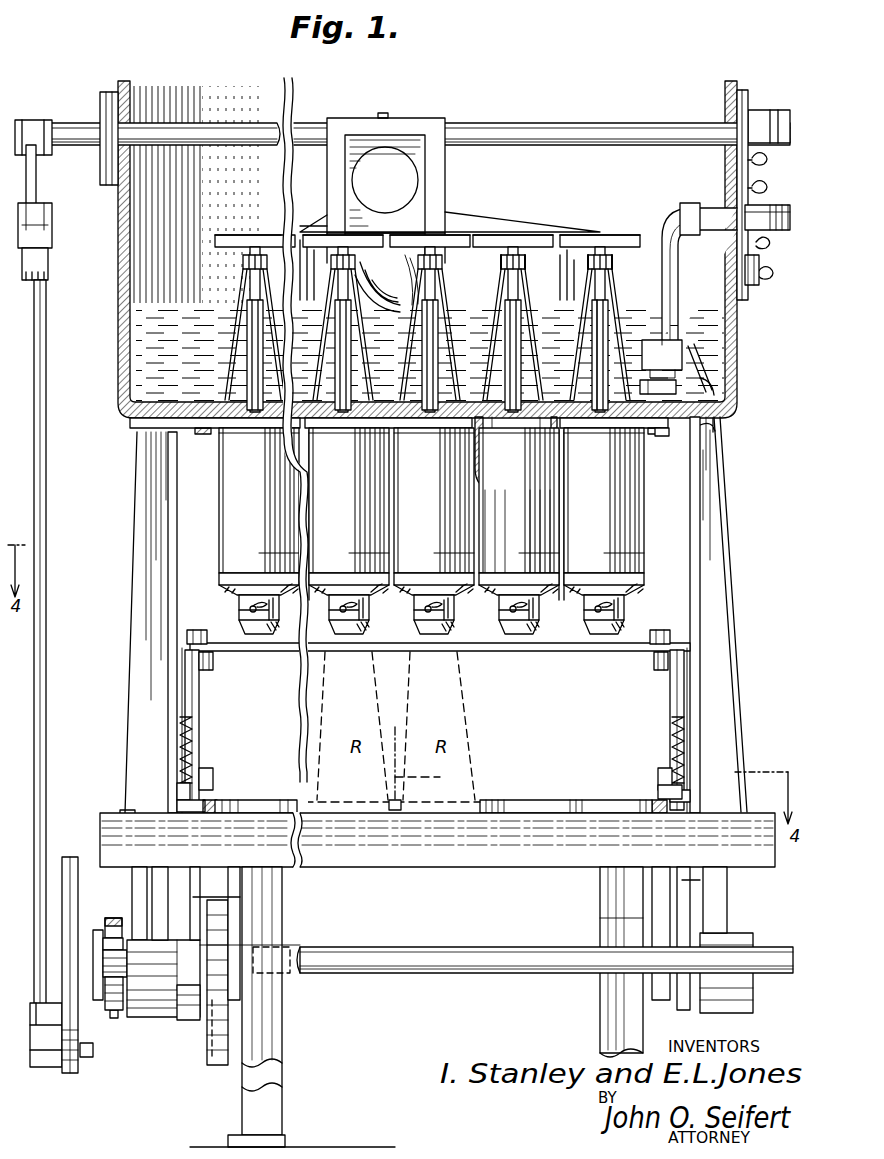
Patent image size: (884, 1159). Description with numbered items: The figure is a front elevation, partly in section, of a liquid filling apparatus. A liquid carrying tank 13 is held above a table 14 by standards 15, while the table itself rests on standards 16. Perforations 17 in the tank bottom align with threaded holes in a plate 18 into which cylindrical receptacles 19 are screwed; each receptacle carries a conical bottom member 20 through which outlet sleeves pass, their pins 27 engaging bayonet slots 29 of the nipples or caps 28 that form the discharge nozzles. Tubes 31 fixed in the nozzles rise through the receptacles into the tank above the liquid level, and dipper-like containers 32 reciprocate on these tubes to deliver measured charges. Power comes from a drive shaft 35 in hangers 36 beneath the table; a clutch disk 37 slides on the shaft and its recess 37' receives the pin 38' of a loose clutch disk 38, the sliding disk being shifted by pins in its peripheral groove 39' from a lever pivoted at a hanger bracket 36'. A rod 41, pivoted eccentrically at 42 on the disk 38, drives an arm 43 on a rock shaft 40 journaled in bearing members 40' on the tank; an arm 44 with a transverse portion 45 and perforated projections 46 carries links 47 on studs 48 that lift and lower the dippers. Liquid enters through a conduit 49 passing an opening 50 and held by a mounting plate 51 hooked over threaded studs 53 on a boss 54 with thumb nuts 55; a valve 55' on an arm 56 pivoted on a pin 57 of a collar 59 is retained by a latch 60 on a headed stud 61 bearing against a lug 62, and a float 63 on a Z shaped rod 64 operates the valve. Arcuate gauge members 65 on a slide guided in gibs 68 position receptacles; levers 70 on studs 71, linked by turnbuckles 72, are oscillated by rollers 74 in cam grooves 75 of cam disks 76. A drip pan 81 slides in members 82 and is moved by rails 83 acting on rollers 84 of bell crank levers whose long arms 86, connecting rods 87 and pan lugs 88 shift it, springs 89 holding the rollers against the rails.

The liquid carrying tank 13 is at (560, 95).
The table 14 is at (415, 860).
The standards 15 is at (130, 612).
The standards 16 is at (283, 1030).
The perforations 17 is at (568, 425).
The plate 18 is at (195, 430).
The cylindrical receptacles 19 is at (225, 517).
The conical bottom members 20 is at (232, 578).
The pins 27 is at (360, 620).
The nipples or caps 28 is at (456, 606).
The bayonet slots 29 is at (247, 622).
The tubes 31 is at (347, 422).
The cylindrical open end containers 32 is at (516, 453).
The drive shaft 35 is at (460, 975).
The hangers 36 is at (459, 973).
The bracket on shaft hanger 36' is at (104, 984).
The clutch disk 37 is at (126, 959).
The recess 37' is at (99, 922).
The clutch disk 38 is at (76, 946).
The pin 38' is at (54, 951).
The peripheral groove 39' is at (105, 955).
The rock shaft 40 is at (402, 170).
The bearing members 40' is at (87, 131).
The rod 41 is at (46, 718).
The eccentric pivot connection 42 is at (48, 1060).
The arm 43 is at (36, 178).
The arm 44 is at (432, 170).
The transverse portion 45 is at (520, 226).
The perforated projections 46 is at (262, 234).
The links 47 is at (247, 370).
The studs 48 is at (528, 264).
The conduit 49 is at (668, 213).
The opening 50 is at (722, 254).
The mounting plate 51 is at (768, 247).
The threaded studs 53 is at (766, 162).
The boss 54 is at (748, 285).
The thumb nuts 55 is at (772, 230).
The valve 55' is at (668, 447).
The arm 56 is at (718, 428).
The pin 57 is at (740, 394).
The collar 59 is at (668, 348).
The latch 60 is at (690, 388).
The headed stud 61 is at (700, 375).
The lug 62 is at (700, 360).
The float 63 is at (386, 283).
The Z shaped rod 64 is at (594, 305).
The gauge members 65 is at (265, 802).
The gibs 68 is at (212, 802).
The levers 70 is at (240, 897).
The studs 71 is at (194, 1021).
The turnbuckles 72 is at (176, 792).
The rollers 74 is at (200, 945).
The cam grooves 75 is at (210, 1060).
The cam disks 76 is at (218, 1066).
The drip pan 81 is at (590, 652).
The slideway members 82 is at (182, 650).
The rails 83 is at (176, 806).
The rollers 84 is at (212, 772).
The long arm 86 is at (200, 705).
The connecting rods 87 is at (200, 630).
The lugs 88 is at (214, 662).
The springs 89 is at (178, 745).